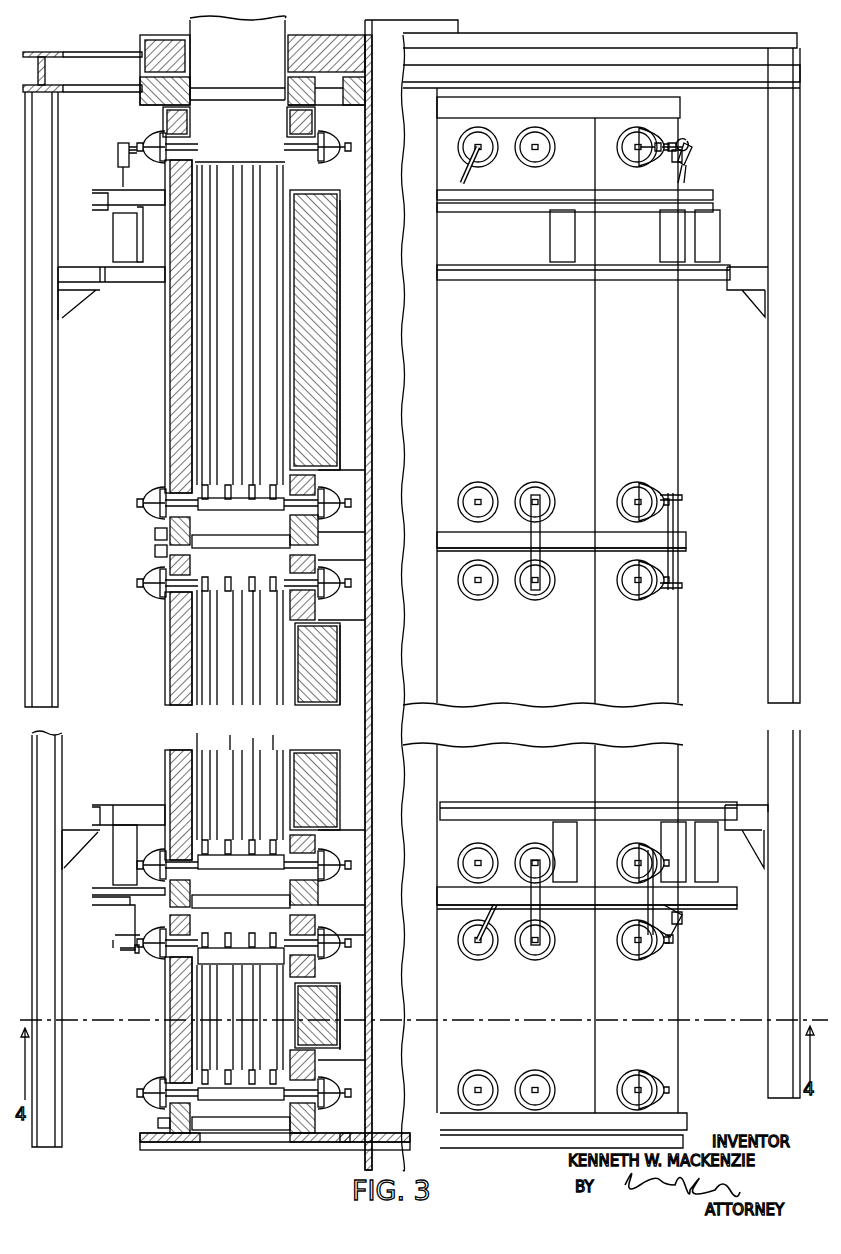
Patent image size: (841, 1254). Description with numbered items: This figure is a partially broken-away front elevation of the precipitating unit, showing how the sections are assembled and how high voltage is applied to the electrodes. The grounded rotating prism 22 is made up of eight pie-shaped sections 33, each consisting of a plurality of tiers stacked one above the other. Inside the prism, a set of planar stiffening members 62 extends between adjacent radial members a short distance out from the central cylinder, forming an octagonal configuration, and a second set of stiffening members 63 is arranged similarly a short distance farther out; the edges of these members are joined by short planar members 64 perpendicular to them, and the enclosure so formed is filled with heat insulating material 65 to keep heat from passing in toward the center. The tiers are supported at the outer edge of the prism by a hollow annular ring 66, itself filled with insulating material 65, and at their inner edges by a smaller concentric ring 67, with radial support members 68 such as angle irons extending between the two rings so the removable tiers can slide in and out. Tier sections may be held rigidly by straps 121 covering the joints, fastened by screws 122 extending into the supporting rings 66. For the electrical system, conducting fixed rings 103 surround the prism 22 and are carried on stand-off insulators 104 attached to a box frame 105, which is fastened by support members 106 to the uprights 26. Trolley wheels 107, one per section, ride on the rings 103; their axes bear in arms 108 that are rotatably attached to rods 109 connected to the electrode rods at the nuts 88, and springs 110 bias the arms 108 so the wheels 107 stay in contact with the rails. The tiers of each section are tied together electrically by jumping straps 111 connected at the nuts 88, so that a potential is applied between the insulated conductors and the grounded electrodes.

The rotating prism 22 is at (132, 360).
The uprights 26 is at (43, 462).
The pie-shaped sections 33 is at (553, 395).
The planar stiffening members 62 is at (337, 340).
The second set of stiffening members 63 is at (337, 368).
The short planar members 64 is at (336, 200).
The heat insulating material 65 is at (318, 296).
The annular ring 66 is at (160, 1124).
The ring 67 is at (313, 1142).
The support member 68 is at (262, 548).
The nuts 88 is at (545, 588).
The conducting fixed rings 103 is at (516, 200).
The stand-off insulators 104 is at (110, 240).
The box frame 105 is at (705, 274).
The support members 106 is at (68, 300).
The trolley wheels 107 is at (700, 185).
The arms 108 is at (126, 145).
The rods 109 is at (690, 148).
The springs 110 is at (682, 142).
The jumping straps 111 is at (540, 528).
The straps 121 is at (157, 551).
The screws 122 is at (157, 540).